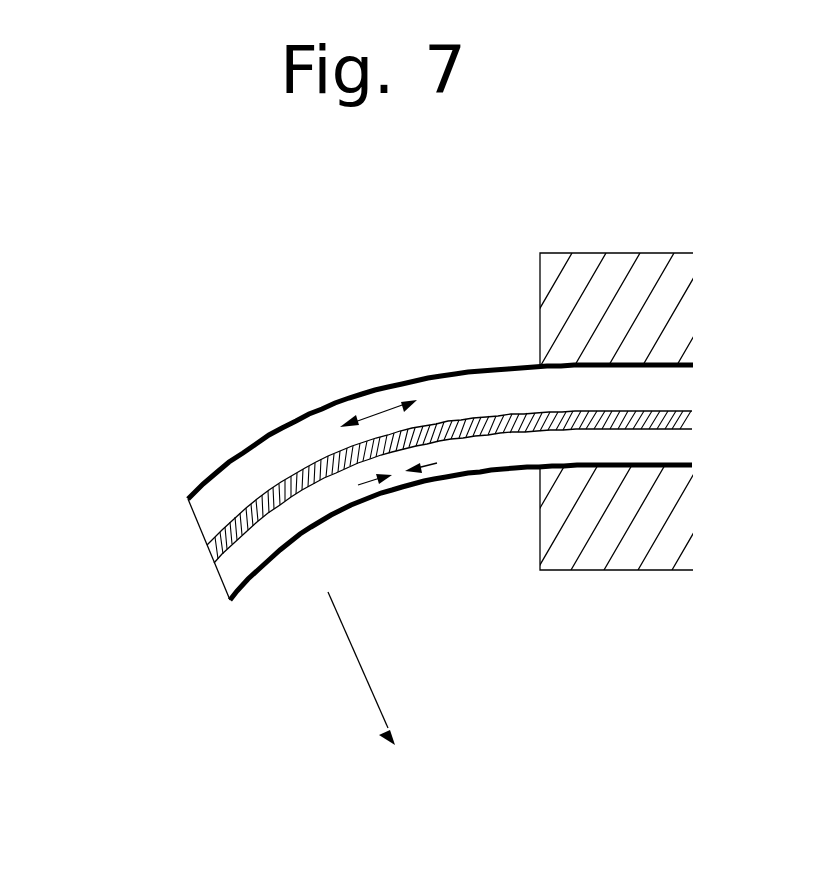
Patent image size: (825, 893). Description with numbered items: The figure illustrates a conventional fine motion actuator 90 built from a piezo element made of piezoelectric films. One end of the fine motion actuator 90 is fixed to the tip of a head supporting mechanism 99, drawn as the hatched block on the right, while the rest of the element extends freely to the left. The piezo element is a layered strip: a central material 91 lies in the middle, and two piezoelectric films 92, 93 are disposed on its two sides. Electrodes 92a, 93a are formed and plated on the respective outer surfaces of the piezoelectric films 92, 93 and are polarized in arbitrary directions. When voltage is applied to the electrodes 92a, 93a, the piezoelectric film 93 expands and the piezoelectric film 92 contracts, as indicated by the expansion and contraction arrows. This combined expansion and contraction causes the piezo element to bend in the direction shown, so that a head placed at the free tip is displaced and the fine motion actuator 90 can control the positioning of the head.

The fine motion actuator 90 is at (222, 303).
The central material 91 is at (205, 537).
The piezoelectric film 92 is at (237, 560).
The electrode 92a is at (347, 513).
The piezoelectric film 93 is at (215, 493).
The electrode 93a is at (318, 408).
The head supporting mechanism 99 is at (692, 290).